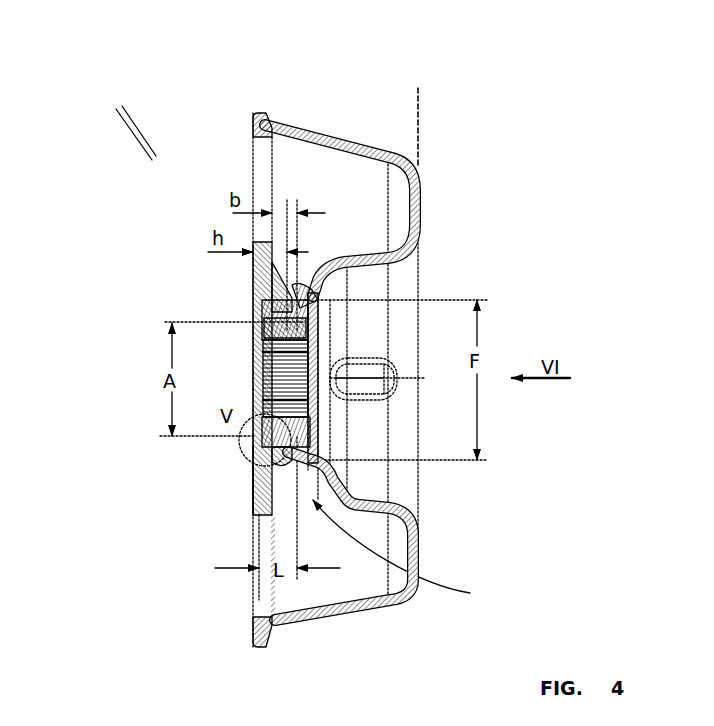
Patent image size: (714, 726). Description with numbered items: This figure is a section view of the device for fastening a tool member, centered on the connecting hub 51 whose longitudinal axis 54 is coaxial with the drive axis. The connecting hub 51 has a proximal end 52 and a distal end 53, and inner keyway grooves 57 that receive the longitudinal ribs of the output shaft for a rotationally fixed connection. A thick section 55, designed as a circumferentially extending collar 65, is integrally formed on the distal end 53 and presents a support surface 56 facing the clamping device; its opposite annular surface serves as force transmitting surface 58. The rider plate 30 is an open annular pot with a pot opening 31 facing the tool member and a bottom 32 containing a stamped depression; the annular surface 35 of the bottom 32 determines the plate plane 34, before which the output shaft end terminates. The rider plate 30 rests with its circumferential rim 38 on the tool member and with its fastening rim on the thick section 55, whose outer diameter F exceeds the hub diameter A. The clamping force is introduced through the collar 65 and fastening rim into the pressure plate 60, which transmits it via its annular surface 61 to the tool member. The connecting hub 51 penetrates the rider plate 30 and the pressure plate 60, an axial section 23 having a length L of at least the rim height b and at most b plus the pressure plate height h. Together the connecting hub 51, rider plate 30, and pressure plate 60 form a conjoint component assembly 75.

The component assembly 75 is at (190, 188).
The rider plate 30 is at (347, 149).
The circumferential rim 38 is at (259, 117).
The plate plane 34 is at (418, 117).
The annular surface 35 is at (421, 197).
The collar 65 is at (305, 302).
The bottom 32 is at (423, 516).
The pot opening 31 is at (264, 600).
The axial section 23 is at (282, 437).
The annular surface 61 is at (251, 505).
The pressure plate 60 is at (265, 278).
The force transmitting surface 58 is at (290, 307).
The connecting hub 51 is at (280, 322).
The inner keyway grooves 57 is at (265, 362).
The support surface 56 is at (310, 322).
The longitudinal axis 54 is at (420, 380).
The proximal end 52 is at (270, 428).
The distal end 53 is at (307, 428).
The thick section 55 is at (319, 455).